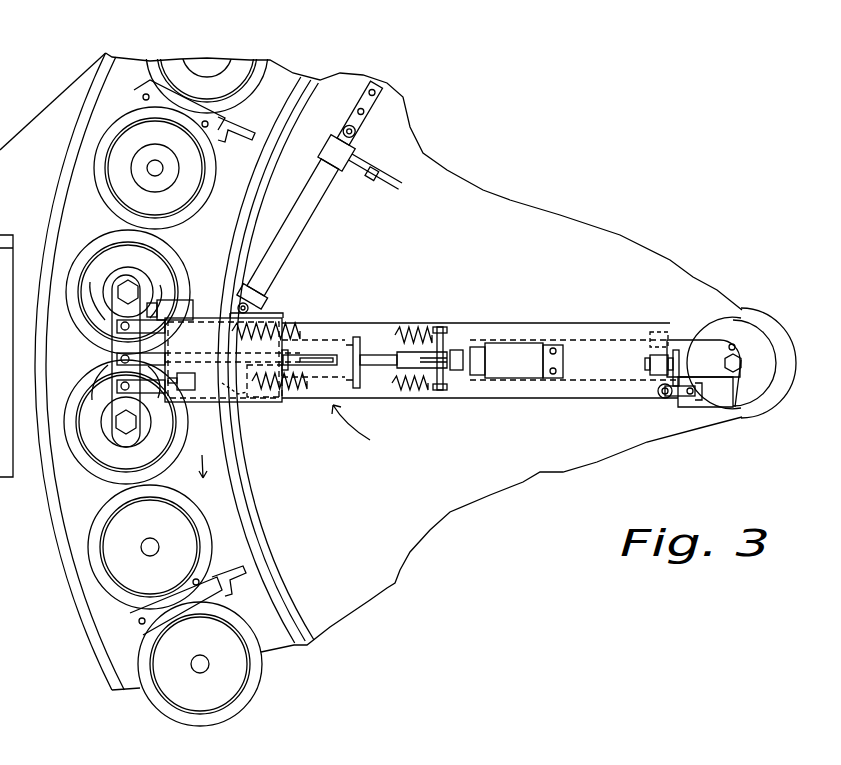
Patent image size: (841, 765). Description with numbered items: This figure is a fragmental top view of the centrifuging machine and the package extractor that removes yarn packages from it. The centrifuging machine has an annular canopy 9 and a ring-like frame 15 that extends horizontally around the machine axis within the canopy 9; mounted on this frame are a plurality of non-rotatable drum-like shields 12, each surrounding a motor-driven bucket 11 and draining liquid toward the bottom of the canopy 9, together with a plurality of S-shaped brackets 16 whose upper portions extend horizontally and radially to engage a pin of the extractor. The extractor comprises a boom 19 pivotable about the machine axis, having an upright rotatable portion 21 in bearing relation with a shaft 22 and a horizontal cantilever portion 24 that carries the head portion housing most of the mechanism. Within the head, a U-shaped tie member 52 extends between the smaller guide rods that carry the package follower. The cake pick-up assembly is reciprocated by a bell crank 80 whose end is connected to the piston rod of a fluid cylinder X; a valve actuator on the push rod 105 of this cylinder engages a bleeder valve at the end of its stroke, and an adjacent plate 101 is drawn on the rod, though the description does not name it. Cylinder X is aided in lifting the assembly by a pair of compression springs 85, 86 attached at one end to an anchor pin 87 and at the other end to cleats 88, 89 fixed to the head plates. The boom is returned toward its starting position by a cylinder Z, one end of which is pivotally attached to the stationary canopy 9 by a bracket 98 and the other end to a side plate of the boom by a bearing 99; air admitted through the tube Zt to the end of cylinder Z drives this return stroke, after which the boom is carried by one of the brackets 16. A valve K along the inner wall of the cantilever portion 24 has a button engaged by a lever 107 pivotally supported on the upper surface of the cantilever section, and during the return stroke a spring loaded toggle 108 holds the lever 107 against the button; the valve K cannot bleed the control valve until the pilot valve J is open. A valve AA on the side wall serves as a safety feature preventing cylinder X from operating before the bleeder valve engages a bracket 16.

The annular canopy 9 is at (43, 508).
The bucket 11 is at (248, 90).
The drum-like shield 12 is at (148, 70).
The ring-like frame 15 is at (125, 612).
The S-shaped bracket 16 is at (238, 137).
The boom 19 is at (290, 441).
The upright rotatable portion 21 is at (783, 388).
The shaft 22 is at (779, 360).
The horizontal cantilever portion 24 is at (536, 402).
The U-shaped tie member 52 is at (115, 360).
The bell crank 80 is at (270, 408).
The compression spring 85 is at (410, 395).
The compression spring 86 is at (405, 326).
The anchor pin 87 is at (445, 352).
The cleat 88 is at (232, 333).
The cleat 89 is at (223, 382).
The bracket 98 is at (375, 110).
The bearing 99 is at (258, 308).
The plate 101 is at (352, 335).
The push rod 105 is at (378, 352).
The lever 107 is at (655, 370).
The spring loaded toggle 108 is at (672, 400).
The valve AA is at (190, 308).
The pilot valve J is at (190, 372).
The valve K is at (650, 335).
The fluid cylinder X is at (525, 357).
The cylinder Z is at (305, 216).
The tube Zt is at (386, 186).